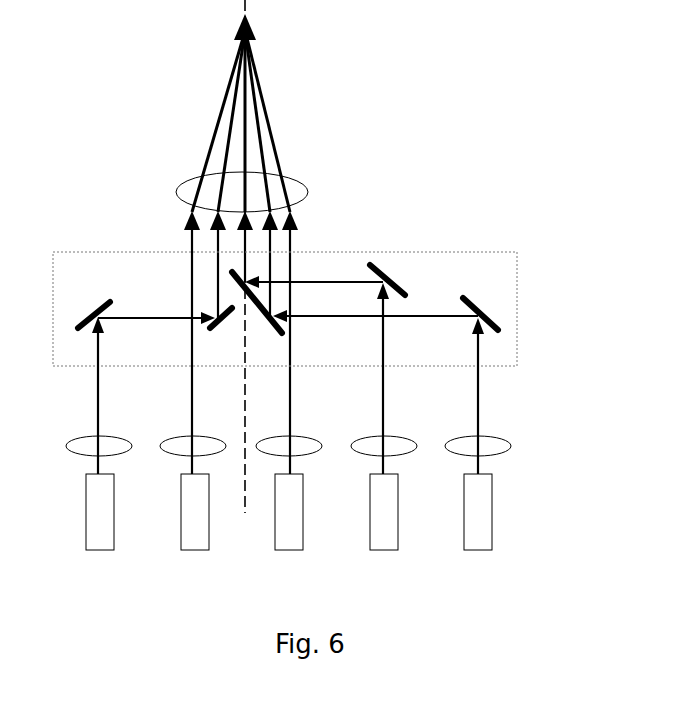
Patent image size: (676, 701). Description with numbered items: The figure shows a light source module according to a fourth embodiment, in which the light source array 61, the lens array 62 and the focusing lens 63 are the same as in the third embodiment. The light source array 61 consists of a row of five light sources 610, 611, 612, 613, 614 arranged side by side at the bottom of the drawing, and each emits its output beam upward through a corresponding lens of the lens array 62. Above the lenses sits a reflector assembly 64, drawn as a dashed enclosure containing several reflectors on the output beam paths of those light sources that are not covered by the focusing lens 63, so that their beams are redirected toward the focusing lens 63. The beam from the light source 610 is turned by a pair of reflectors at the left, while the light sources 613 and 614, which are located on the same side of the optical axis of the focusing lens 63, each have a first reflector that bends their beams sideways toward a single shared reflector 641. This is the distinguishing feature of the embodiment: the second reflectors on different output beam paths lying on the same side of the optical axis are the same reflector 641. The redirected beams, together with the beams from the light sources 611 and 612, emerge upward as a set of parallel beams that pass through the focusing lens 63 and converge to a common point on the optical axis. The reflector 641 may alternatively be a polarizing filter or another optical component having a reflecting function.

The light source array 61 is at (522, 535).
The lens array 62 is at (519, 413).
The focusing lens 63 is at (283, 166).
The reflector assembly 64 is at (326, 353).
The reflector 641 is at (242, 319).
The light source 610 is at (66, 550).
The light source 611 is at (160, 550).
The light source 612 is at (255, 550).
The light source 613 is at (417, 550).
The light source 614 is at (515, 550).